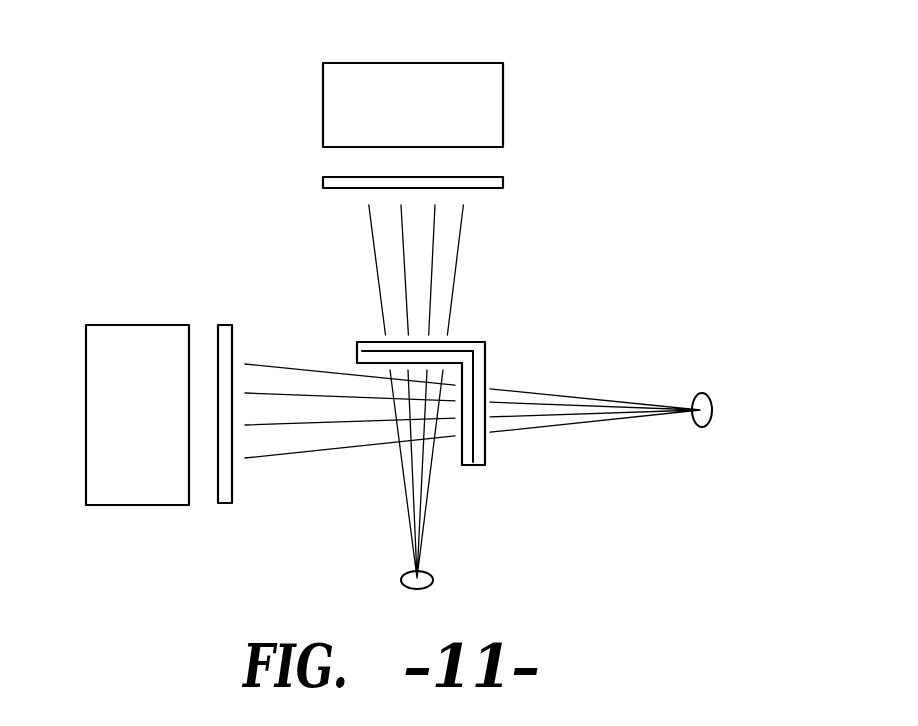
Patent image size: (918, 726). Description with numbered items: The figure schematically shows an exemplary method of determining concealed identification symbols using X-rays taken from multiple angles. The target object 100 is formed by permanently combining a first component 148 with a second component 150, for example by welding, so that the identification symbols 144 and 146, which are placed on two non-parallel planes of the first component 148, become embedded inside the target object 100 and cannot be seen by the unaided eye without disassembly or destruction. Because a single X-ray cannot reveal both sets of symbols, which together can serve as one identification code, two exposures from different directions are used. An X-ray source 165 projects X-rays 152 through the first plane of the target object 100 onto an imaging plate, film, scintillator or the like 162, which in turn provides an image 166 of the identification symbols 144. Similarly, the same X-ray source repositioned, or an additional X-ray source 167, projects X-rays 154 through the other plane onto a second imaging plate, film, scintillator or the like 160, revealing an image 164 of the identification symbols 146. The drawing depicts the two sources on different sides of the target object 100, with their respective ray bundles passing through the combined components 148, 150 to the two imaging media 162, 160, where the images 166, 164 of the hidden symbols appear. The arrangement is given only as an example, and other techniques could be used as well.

The target object 100 is at (406, 395).
The identification symbols 144 is at (119, 348).
The identification symbols 146 is at (486, 105).
The first component 148 is at (467, 465).
The second component 150 is at (477, 358).
The X-rays 152 is at (545, 403).
The X-rays 154 is at (390, 250).
The imaging plate, film, scintillator or the like 160 is at (503, 182).
The imaging plate, film, scintillator or the like 162 is at (223, 505).
The image of identification symbols 164 is at (350, 82).
The X-ray source 165 is at (703, 392).
The image of identification symbols 166 is at (142, 487).
The repositioned or additional X-ray source 167 is at (433, 583).